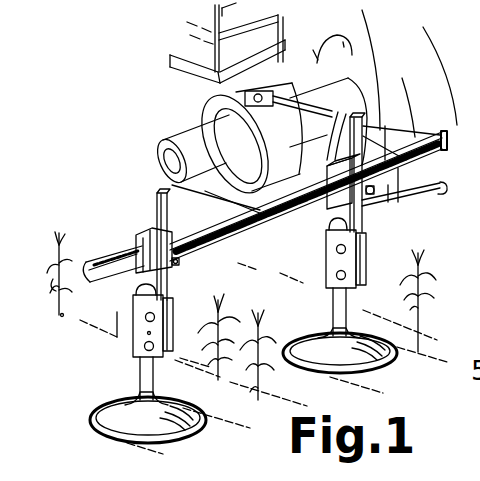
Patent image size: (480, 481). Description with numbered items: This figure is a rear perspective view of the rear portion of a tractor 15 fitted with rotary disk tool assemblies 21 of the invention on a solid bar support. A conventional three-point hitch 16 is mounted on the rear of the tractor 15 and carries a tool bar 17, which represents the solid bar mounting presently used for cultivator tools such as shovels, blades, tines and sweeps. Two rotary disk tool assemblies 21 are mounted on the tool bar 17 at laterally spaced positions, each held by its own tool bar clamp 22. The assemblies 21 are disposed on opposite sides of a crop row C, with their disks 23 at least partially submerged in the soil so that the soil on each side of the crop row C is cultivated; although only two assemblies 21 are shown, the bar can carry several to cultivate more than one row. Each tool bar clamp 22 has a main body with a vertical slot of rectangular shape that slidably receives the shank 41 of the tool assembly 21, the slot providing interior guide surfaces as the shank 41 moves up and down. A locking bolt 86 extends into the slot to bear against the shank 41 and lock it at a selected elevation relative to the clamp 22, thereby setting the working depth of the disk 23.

The tractor 15 is at (182, 120).
The shank 41 is at (158, 194).
The tool bar clamp 22 is at (131, 222).
The tool bar 17 is at (116, 251).
The three-point hitch 16 is at (285, 236).
The rotary disk tool assembly 21 is at (125, 340).
The locking bolt 86 is at (177, 266).
The disk 23 is at (205, 425).
The crop row C is at (290, 388).